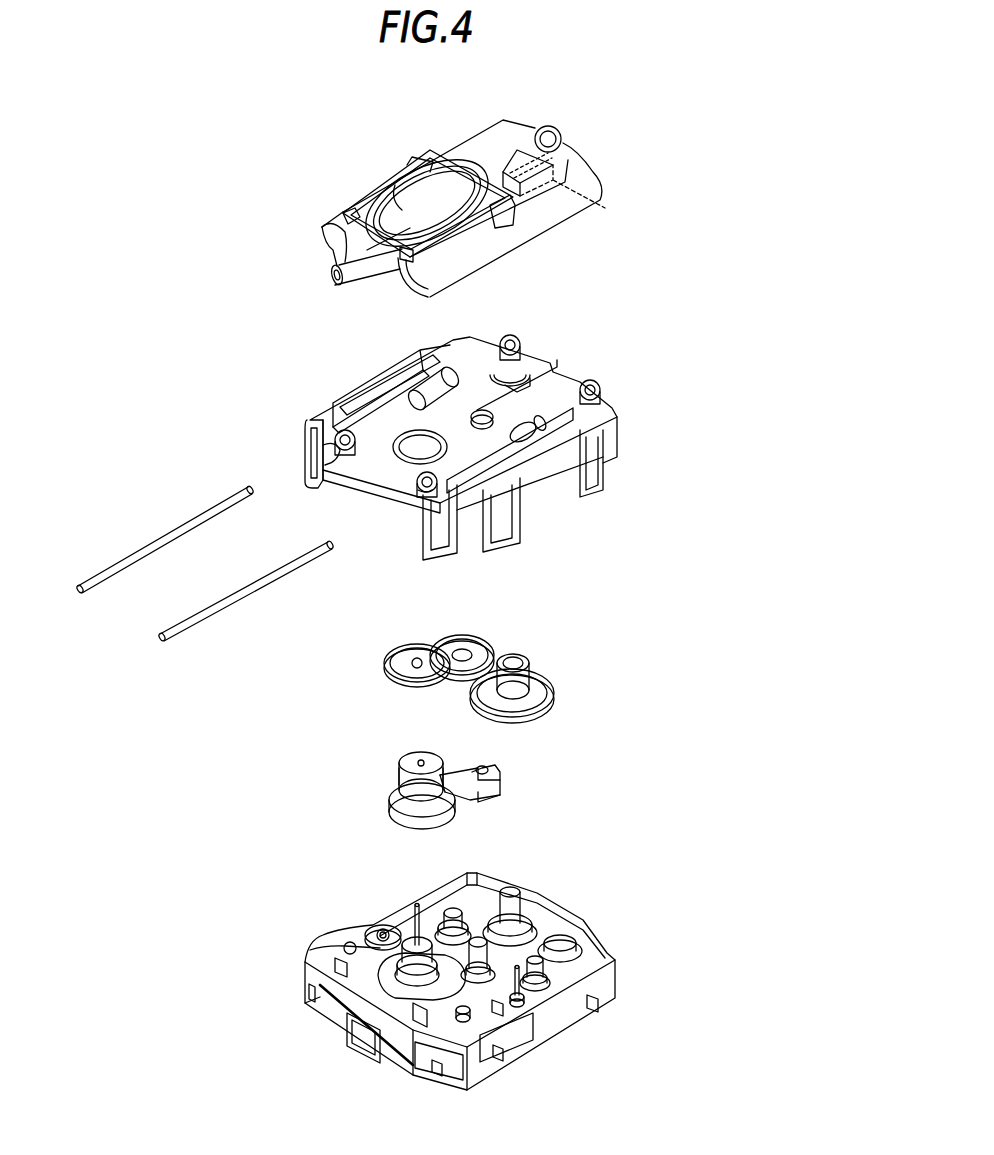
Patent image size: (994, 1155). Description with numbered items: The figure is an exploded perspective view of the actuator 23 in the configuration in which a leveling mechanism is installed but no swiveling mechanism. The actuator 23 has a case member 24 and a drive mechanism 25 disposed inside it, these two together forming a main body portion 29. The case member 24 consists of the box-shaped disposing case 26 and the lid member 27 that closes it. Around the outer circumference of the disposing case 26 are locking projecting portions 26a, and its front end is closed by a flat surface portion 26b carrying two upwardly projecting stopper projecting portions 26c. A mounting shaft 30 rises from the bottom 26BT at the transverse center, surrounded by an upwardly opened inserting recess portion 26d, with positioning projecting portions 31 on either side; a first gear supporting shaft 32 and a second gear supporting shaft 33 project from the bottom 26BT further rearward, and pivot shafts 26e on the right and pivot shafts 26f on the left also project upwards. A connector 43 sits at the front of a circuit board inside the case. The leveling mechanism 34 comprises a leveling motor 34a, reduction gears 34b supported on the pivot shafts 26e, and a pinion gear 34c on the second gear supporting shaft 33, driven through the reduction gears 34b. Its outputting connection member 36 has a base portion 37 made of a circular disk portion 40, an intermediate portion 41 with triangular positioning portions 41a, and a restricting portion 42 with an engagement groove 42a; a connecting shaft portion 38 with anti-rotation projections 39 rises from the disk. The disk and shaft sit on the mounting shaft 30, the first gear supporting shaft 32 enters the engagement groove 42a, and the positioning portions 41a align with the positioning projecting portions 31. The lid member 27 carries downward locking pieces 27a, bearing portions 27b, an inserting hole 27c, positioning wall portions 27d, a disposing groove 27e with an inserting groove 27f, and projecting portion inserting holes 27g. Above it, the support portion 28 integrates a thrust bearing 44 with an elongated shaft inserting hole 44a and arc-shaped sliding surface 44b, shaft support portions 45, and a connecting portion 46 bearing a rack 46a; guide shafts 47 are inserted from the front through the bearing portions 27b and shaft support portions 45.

The actuator 23 is at (219, 279).
The case member 24 is at (724, 613).
The drive mechanism 25 is at (585, 642).
The disposing case 26 is at (600, 950).
The bottom 26BT is at (607, 940).
The locking projecting portions 26a is at (309, 992).
The flat surface portion 26b is at (325, 938).
The stopper projecting portions 26c is at (344, 946).
The inserting recess portion 26d is at (318, 1000).
The pivot shafts 26e is at (410, 940).
The pivot shafts 26f is at (560, 935).
The lid member 27 is at (607, 437).
The locking pieces 27a is at (303, 465).
The bearing portions 27b is at (510, 335).
The inserting hole 27c is at (405, 450).
The positioning wall portions 27d is at (335, 410).
The disposing groove 27e is at (530, 370).
The inserting groove 27f is at (488, 416).
The projecting portion inserting holes 27g is at (335, 465).
The support portion 28 is at (512, 120).
The main body portion 29 is at (697, 580).
The mounting shaft 30 is at (380, 1000).
The positioning projecting portions 31 is at (417, 905).
The first gear supporting shaft 32 is at (480, 940).
The second gear supporting shaft 33 is at (511, 890).
The leveling mechanism 34 is at (345, 660).
The leveling motor 34a is at (375, 932).
The reduction gears 34b is at (398, 650).
The pinion gear 34c is at (550, 712).
The outputting connection member 36 is at (388, 798).
The base portion 37 is at (390, 808).
The connecting shaft portion 38 is at (410, 752).
The anti-rotation projections 39 is at (400, 770).
The circular disk portion 40 is at (400, 822).
The intermediate portion 41 is at (460, 770).
The positioning portions 41a is at (490, 800).
The restricting portion 42 is at (500, 778).
The engagement groove 42a is at (488, 768).
The connector 43 is at (352, 1047).
The thrust bearing 44 is at (375, 186).
The shaft inserting hole 44a is at (407, 207).
The sliding surface 44b is at (350, 212).
The shaft support portions 45 is at (326, 228).
The connecting portion 46 is at (500, 136).
The rack 46a is at (565, 183).
The guide shafts 47 is at (172, 530).